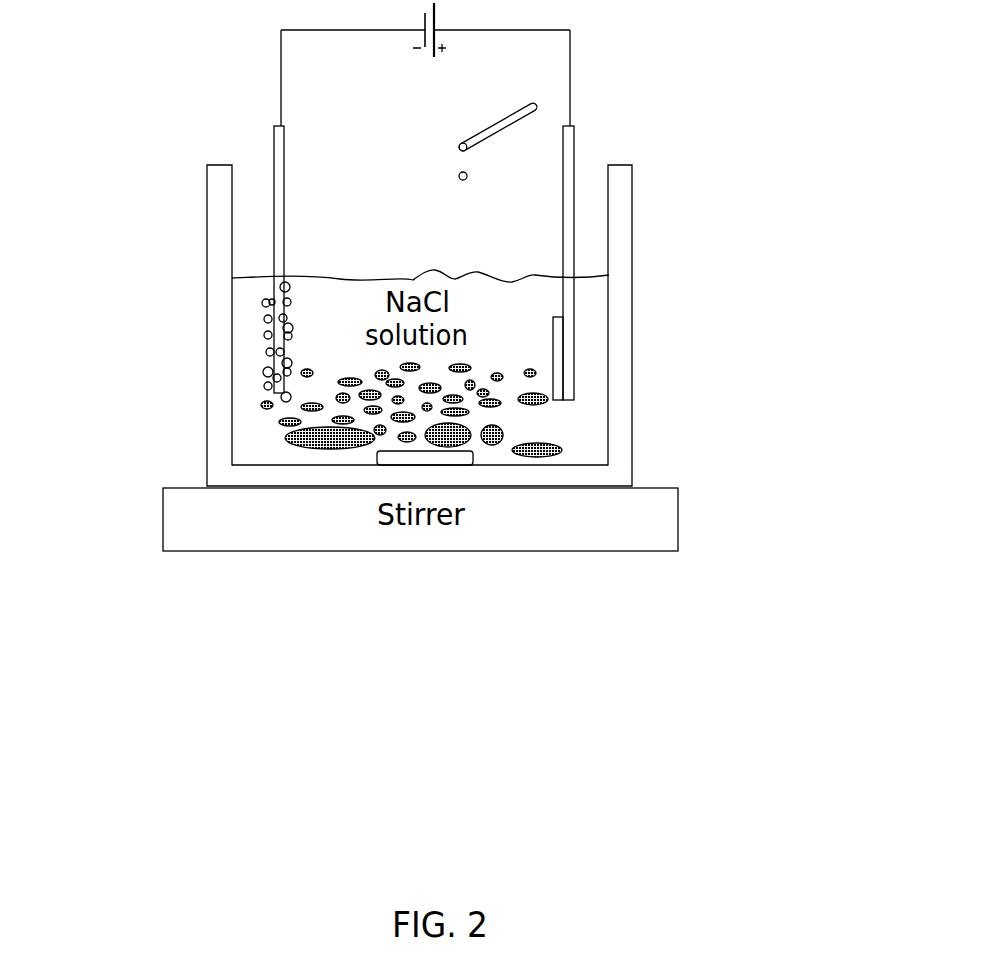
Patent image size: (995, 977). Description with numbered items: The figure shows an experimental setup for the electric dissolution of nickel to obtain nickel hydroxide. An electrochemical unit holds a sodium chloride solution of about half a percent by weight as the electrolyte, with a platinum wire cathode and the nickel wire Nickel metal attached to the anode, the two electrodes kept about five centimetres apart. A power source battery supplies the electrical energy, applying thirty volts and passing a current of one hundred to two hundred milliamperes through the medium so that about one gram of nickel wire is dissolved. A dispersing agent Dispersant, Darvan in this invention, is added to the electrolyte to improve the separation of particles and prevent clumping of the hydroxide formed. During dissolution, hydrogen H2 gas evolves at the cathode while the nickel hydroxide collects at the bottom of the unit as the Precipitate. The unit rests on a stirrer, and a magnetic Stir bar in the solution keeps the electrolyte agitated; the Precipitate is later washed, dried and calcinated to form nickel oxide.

The dispersing agent Dispersant is at (474, 173).
The nickel wire Nickel metal is at (566, 392).
The magnetic stirrer Stir bar is at (483, 452).
The hydrogen gas H2 gas is at (260, 300).
The precipitate Precipitate is at (283, 438).
The power source battery is at (425, 64).